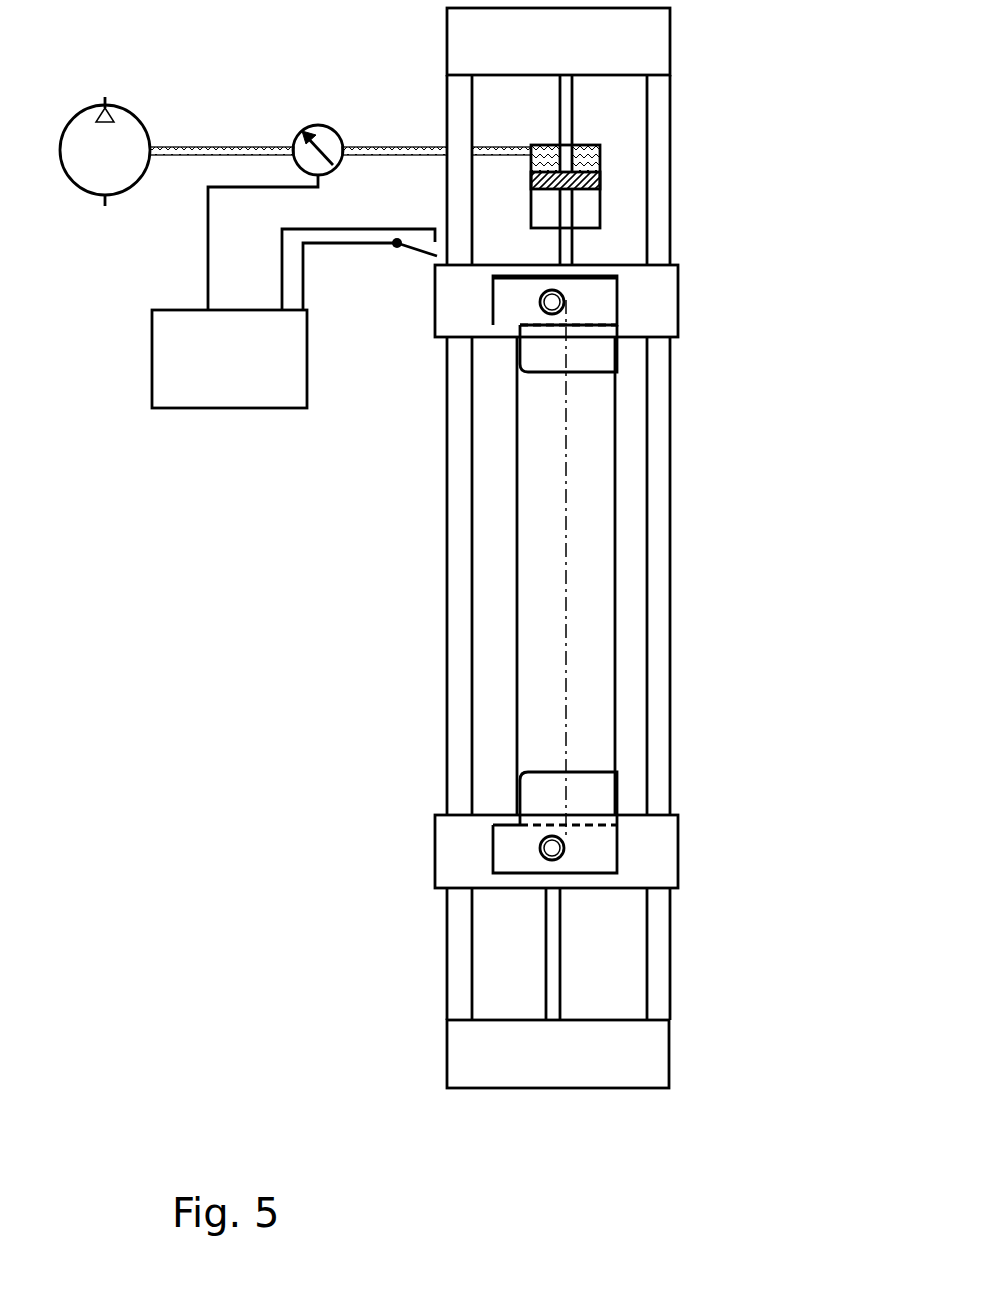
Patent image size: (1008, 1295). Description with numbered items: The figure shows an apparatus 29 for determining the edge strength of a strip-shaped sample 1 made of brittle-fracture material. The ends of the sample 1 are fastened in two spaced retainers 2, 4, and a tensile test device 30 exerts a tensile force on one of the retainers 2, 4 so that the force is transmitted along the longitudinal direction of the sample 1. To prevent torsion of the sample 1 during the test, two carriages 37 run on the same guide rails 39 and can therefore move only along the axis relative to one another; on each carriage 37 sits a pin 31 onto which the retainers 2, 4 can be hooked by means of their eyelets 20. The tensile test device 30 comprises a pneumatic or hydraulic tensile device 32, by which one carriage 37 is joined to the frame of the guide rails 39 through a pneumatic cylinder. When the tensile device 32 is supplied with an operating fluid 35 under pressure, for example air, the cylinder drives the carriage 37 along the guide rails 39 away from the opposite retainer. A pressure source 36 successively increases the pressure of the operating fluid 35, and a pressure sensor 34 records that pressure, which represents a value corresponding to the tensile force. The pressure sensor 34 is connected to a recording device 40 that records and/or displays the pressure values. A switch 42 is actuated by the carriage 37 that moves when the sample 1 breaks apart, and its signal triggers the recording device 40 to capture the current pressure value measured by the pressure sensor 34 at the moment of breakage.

The strip-shaped sample 1 is at (616, 630).
The retainer 2 is at (617, 315).
The retainer 4 is at (620, 848).
The eyelet 20 is at (540, 308).
The apparatus 29 is at (211, 1042).
The tensile test device 30 is at (270, 478).
The pin 31 is at (563, 306).
The pneumatic or hydraulic tensile device 32 is at (600, 205).
The pressure sensor 34 is at (319, 128).
The operating fluid 35 is at (600, 150).
The pressure source 36 is at (138, 113).
The carriage 37 is at (678, 283).
The guide rails 39 is at (672, 213).
The recording device 40 is at (293, 291).
The switch 42 is at (417, 253).